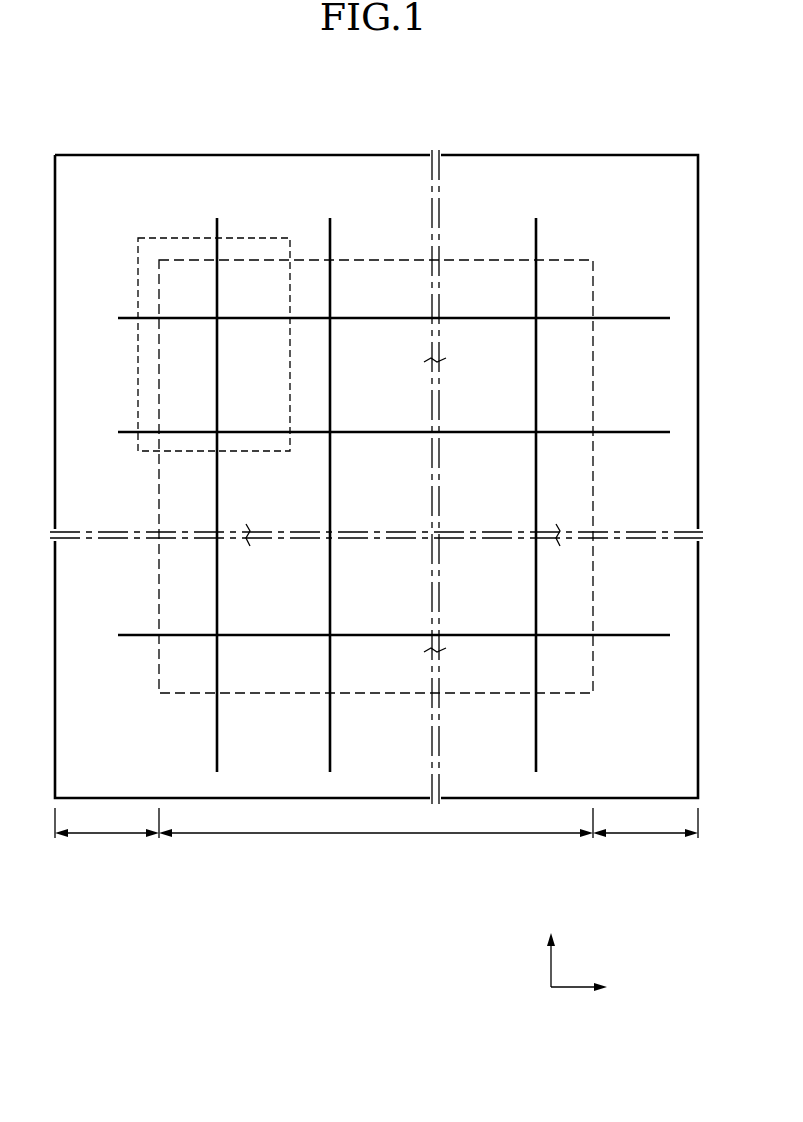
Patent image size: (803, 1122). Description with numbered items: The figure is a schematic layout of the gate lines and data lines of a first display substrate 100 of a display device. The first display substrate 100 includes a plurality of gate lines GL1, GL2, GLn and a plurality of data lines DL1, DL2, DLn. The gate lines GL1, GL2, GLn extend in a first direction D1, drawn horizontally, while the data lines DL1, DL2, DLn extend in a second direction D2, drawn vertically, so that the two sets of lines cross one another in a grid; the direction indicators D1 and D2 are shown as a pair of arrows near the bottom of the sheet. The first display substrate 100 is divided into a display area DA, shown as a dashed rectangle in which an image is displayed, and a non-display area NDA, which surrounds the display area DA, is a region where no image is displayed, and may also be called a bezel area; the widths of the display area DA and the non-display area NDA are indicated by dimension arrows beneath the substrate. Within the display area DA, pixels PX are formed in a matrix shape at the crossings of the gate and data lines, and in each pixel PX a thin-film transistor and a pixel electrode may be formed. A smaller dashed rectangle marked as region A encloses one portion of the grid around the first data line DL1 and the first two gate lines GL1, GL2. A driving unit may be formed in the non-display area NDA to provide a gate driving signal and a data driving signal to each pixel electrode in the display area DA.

The first display substrate 100 is at (478, 138).
The data line DL1 is at (214, 480).
The data line DL2 is at (329, 480).
The data line DLn is at (534, 480).
The gate line GL1 is at (371, 319).
The gate line GL2 is at (371, 433).
The gate line GLn is at (371, 636).
The pixel PX is at (301, 405).
The area A is at (137, 238).
The display area DA is at (376, 564).
The non-display area NDA is at (376, 838).
The first direction D1 is at (596, 990).
The second direction D2 is at (550, 947).